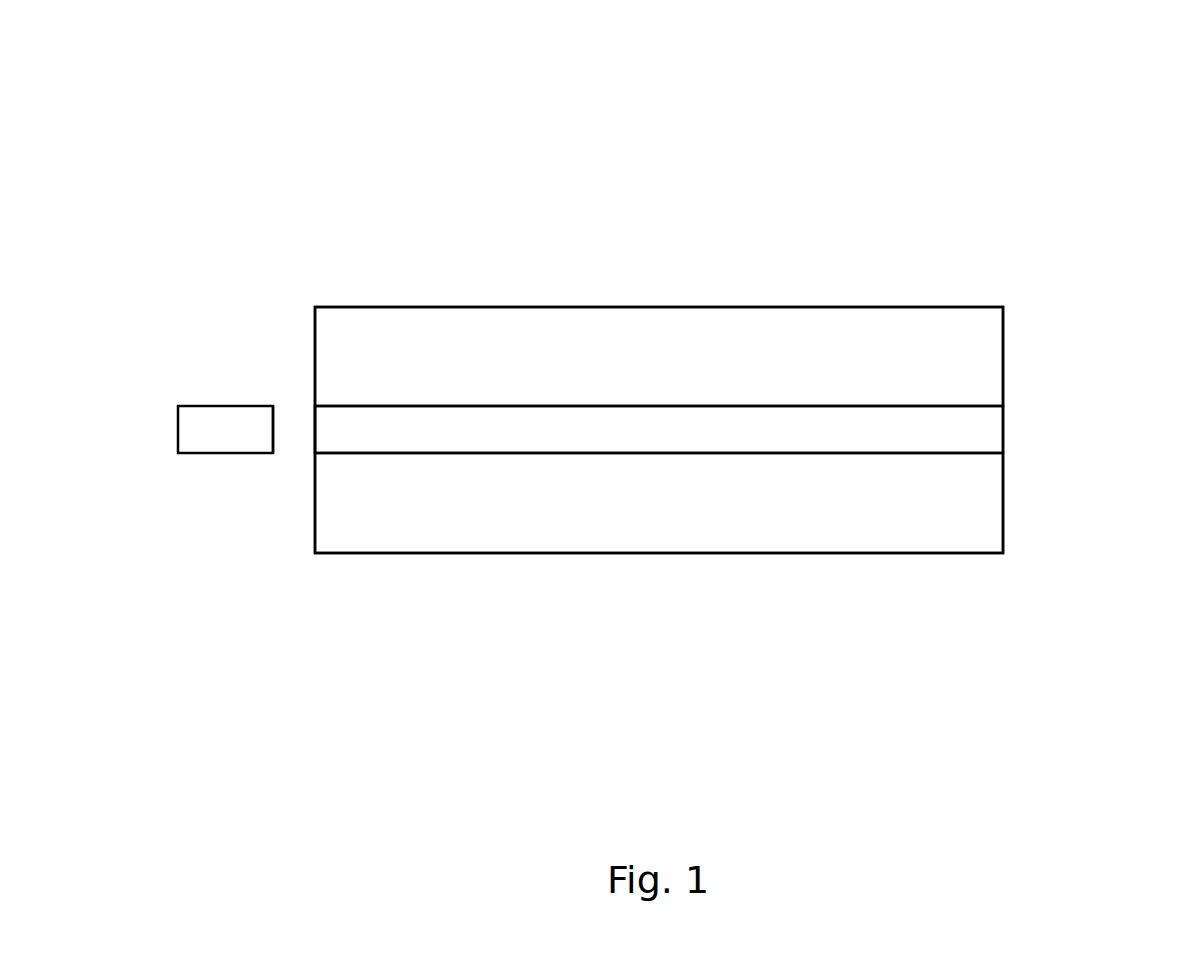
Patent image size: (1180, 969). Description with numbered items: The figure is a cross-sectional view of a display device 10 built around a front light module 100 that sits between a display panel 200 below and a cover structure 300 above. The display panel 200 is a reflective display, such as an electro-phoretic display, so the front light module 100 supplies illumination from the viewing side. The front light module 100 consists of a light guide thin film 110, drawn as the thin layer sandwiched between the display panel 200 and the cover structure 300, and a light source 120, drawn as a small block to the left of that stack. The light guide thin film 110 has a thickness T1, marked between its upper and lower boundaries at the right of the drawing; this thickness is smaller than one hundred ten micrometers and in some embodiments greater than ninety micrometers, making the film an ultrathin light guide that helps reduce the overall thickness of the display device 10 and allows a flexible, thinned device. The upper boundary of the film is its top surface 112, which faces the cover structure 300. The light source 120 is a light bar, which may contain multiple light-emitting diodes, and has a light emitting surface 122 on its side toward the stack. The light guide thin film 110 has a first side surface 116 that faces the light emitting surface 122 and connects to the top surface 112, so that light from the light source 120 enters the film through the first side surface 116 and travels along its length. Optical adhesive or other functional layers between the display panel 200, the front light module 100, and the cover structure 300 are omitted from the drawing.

The display device 10 is at (1156, 74).
The front light module 100 is at (368, 258).
The light guide thin film 110 is at (342, 408).
The top surface 112 is at (765, 405).
The first side surface 116 is at (316, 440).
The light source 120 is at (230, 408).
The light emitting surface 122 is at (276, 443).
The display panel 200 is at (997, 517).
The cover structure 300 is at (997, 352).
The thickness T1 is at (1003, 406).